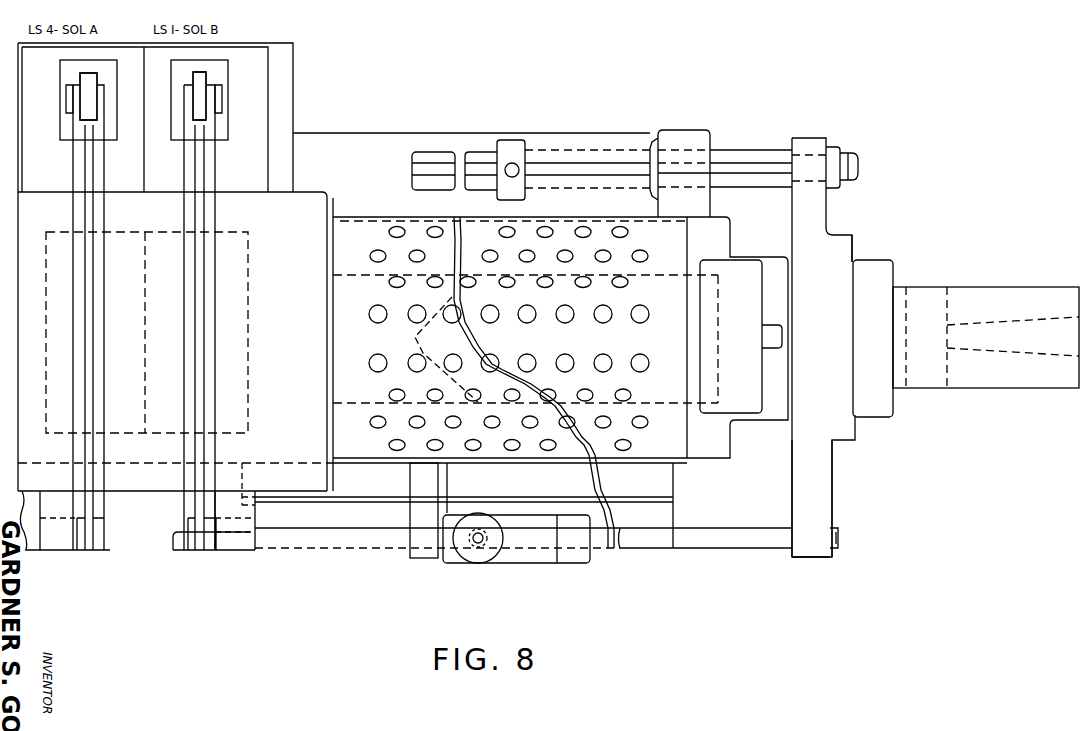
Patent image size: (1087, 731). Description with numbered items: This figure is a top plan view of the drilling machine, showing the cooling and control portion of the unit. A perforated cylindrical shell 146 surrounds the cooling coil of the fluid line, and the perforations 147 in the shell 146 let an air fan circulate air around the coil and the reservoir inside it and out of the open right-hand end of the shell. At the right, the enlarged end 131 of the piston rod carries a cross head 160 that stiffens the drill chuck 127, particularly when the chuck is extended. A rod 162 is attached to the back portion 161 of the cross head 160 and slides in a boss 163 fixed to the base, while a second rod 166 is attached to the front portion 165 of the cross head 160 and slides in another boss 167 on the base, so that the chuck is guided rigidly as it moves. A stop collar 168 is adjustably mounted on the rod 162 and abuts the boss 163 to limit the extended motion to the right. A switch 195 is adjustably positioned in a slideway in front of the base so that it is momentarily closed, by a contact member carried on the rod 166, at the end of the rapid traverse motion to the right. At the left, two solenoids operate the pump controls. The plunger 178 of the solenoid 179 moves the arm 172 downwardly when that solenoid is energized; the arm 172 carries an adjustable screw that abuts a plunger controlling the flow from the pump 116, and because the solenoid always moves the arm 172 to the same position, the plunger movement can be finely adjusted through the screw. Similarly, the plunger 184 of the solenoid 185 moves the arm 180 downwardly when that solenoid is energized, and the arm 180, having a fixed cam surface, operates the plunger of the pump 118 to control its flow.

The pump 116 is at (233, 253).
The pump 118 is at (128, 247).
The drill chuck 127 is at (1010, 277).
The right hand enlarged end of the piston rod 131 is at (868, 270).
The perforated cylindrical shell 146 is at (357, 232).
The perforations 147 is at (641, 257).
The cross head 160 is at (815, 228).
The back portion of the cross head 161 is at (807, 140).
The rod 162 is at (763, 128).
The boss 163 is at (702, 113).
The front portion of the cross head 165 is at (813, 511).
The rod 166 is at (735, 538).
The boss 167 is at (428, 552).
The stop collar 168 is at (512, 142).
The arm 172 is at (200, 313).
The plunger 178 is at (198, 86).
The solenoid 179 is at (222, 121).
The arm 180 is at (88, 314).
The plunger 184 is at (88, 97).
The solenoid 185 is at (68, 124).
The switch 195 is at (477, 555).